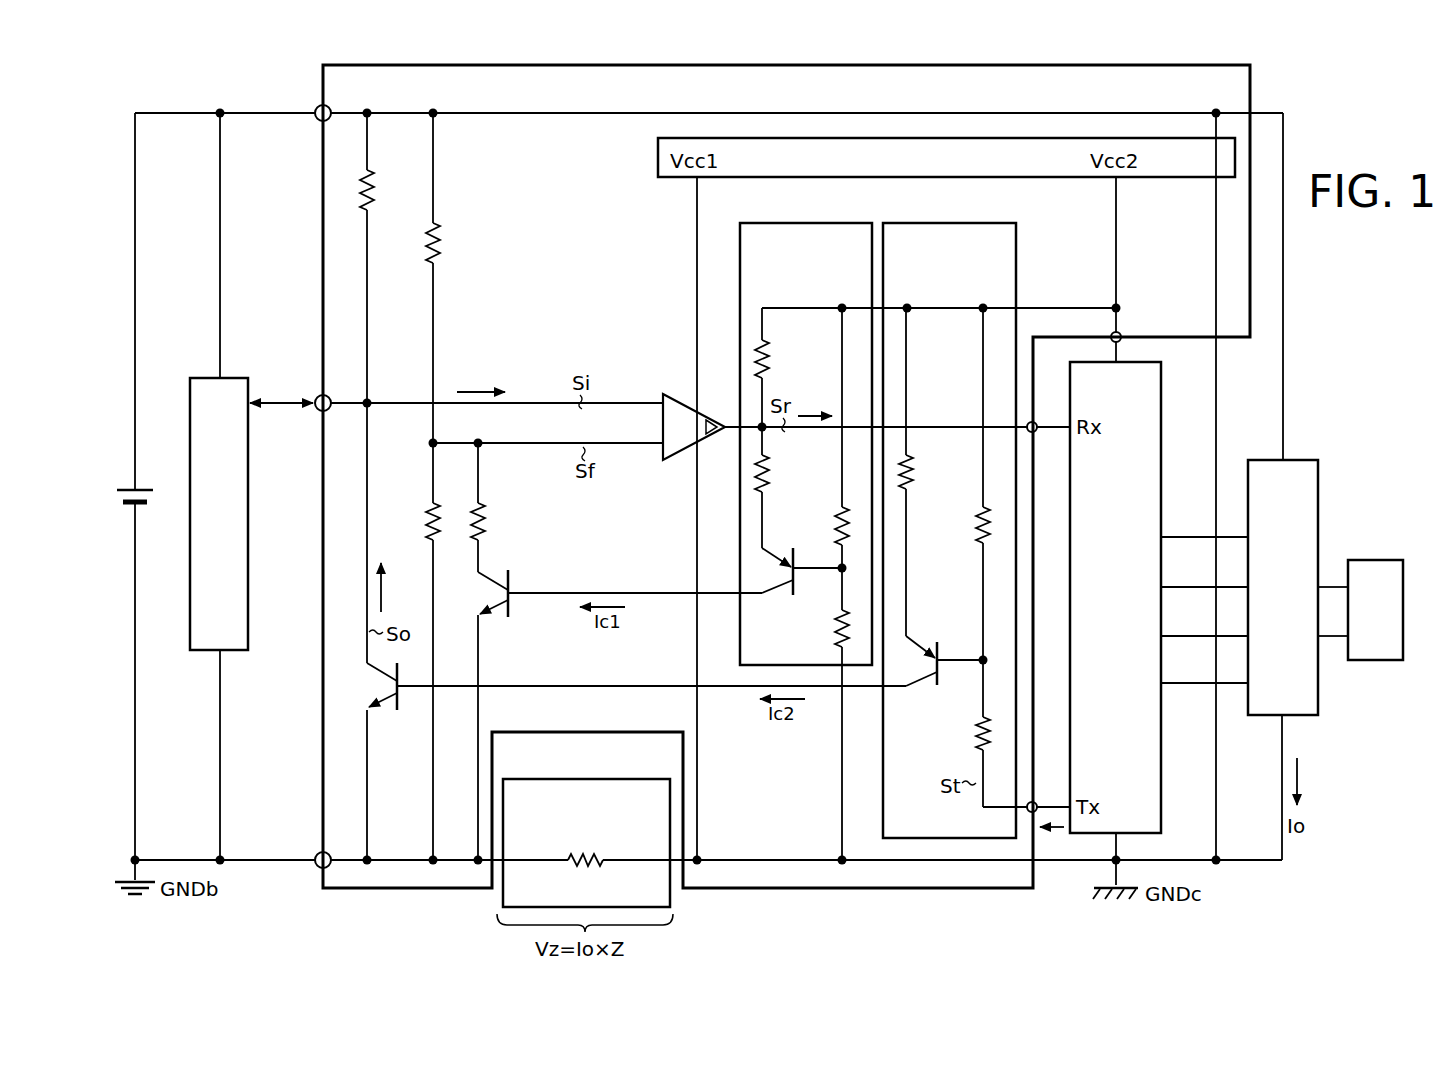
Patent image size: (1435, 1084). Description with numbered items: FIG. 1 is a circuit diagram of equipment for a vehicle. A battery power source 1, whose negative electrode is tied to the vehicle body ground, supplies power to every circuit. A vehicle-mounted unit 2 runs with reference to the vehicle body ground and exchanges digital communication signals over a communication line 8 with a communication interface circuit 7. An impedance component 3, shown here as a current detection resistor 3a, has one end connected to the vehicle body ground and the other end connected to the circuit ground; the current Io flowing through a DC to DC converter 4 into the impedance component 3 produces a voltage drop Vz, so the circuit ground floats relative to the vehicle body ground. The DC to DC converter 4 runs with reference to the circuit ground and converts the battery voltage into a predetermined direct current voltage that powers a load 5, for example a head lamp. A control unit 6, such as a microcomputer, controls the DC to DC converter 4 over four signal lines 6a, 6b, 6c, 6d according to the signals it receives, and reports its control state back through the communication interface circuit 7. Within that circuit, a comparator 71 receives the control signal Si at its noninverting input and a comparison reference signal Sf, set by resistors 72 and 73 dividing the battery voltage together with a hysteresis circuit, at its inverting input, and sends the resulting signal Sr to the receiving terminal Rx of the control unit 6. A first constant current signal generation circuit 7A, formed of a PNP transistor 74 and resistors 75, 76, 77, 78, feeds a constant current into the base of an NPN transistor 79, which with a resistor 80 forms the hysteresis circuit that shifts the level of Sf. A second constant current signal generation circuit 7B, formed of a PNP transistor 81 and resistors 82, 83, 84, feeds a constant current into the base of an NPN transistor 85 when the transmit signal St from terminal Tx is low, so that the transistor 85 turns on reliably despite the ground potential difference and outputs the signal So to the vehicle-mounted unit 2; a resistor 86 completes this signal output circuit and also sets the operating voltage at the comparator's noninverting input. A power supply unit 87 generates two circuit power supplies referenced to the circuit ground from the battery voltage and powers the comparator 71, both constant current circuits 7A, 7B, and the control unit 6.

The battery power source 1 is at (146, 496).
The vehicle-mounted unit 2 is at (242, 377).
The impedance component 3 is at (586, 823).
The resistor 3a is at (603, 866).
The DC to DC converter 4 is at (1306, 458).
The load 5 is at (1386, 559).
The control unit 6 is at (1163, 383).
The signal line 6a is at (1187, 537).
The signal line 6b is at (1187, 587).
The signal line 6c is at (1187, 636).
The signal line 6d is at (1187, 683).
The communication interface circuit 7 is at (323, 84).
The first constant current signal generation circuit 7A is at (821, 223).
The second constant current signal generation circuit 7B is at (972, 223).
The communication line 8 is at (279, 405).
The comparator 71 is at (672, 462).
The resistor 72 is at (442, 241).
The resistor 73 is at (420, 521).
The transistor 74 is at (773, 597).
The resistor 75 is at (771, 359).
The resistor 76 is at (771, 473).
The resistor 77 is at (828, 528).
The resistor 78 is at (831, 637).
The transistor 79 is at (497, 620).
The resistor 80 is at (487, 521).
The transistor 81 is at (918, 654).
The resistor 82 is at (915, 470).
The resistor 83 is at (966, 526).
The resistor 84 is at (966, 735).
The transistor 85 is at (383, 713).
The resistor 86 is at (376, 190).
The power supply unit 87 is at (655, 158).